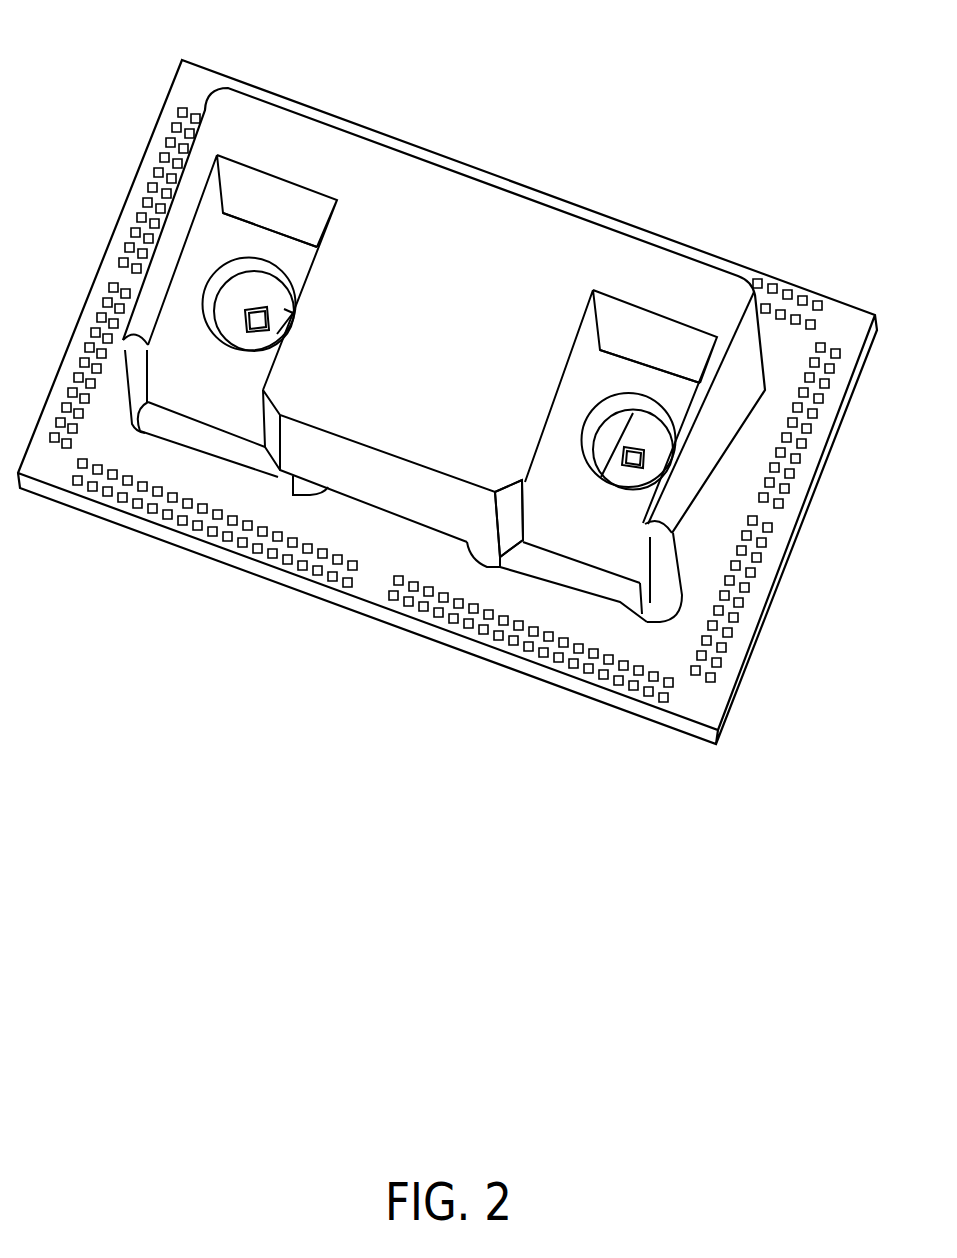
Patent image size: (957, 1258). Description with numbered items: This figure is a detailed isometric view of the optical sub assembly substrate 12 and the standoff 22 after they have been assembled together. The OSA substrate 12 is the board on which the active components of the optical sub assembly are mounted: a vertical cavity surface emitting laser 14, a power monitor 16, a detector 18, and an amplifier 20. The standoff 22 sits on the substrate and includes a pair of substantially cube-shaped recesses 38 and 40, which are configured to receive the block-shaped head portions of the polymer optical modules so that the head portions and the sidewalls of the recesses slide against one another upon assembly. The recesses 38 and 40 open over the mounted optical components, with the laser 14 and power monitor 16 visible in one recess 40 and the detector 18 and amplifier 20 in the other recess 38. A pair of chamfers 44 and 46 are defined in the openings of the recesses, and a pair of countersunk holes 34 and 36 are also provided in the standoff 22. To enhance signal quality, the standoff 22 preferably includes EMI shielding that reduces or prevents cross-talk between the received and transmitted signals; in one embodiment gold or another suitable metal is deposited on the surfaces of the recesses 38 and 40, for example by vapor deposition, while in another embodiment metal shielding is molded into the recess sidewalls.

The optical sub assembly substrate 12 is at (742, 652).
The vertical cavity surface emitting laser 14 is at (252, 311).
The power monitor 16 is at (292, 311).
The detector 18 is at (643, 449).
The amplifier 20 is at (604, 443).
The standoff 22 is at (548, 202).
The countersunk hole 34 is at (592, 467).
The countersunk hole 36 is at (208, 313).
The recess 38 is at (583, 388).
The recess 40 is at (234, 244).
The chamfer 44 is at (508, 520).
The chamfer 46 is at (268, 443).